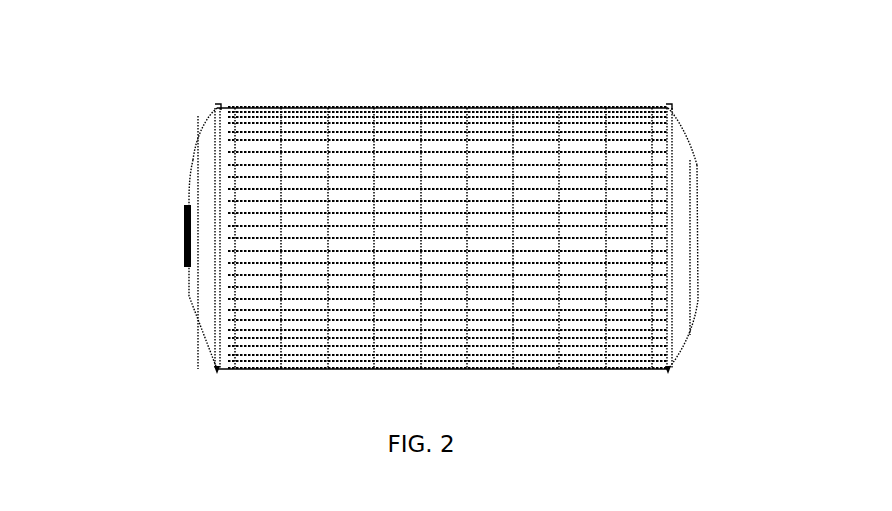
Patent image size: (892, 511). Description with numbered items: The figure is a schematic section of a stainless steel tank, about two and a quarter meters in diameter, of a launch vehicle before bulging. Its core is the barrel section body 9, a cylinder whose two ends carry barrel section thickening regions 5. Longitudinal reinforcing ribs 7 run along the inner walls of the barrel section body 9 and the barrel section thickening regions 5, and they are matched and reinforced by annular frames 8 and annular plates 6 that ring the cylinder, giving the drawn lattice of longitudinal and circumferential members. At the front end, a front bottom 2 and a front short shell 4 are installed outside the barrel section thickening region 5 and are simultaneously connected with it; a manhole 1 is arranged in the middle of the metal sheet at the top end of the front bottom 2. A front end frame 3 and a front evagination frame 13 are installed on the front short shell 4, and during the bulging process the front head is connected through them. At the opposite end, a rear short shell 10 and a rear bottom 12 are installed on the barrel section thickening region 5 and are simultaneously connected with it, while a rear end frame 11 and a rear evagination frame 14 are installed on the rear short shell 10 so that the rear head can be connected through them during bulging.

The manhole 1 is at (183, 204).
The front bottom 2 is at (190, 159).
The front end frame 3 is at (213, 106).
The front evagination frame 13 is at (217, 102).
The front short shell 4 is at (219, 100).
The barrel section thickening region 5 is at (232, 104).
The annular plate 6 is at (237, 124).
The longitudinal reinforcing rib 7 is at (268, 124).
The annular frame 8 is at (329, 107).
The barrel section body 9 is at (388, 105).
The rear short shell 10 is at (665, 104).
The rear evagination frame 14 is at (674, 101).
The rear end frame 11 is at (675, 107).
The rear bottom 12 is at (694, 152).